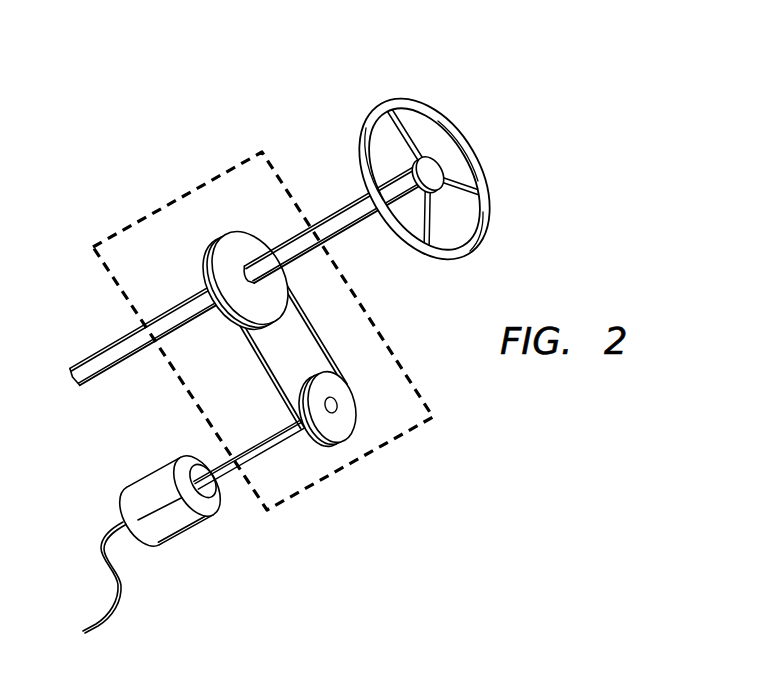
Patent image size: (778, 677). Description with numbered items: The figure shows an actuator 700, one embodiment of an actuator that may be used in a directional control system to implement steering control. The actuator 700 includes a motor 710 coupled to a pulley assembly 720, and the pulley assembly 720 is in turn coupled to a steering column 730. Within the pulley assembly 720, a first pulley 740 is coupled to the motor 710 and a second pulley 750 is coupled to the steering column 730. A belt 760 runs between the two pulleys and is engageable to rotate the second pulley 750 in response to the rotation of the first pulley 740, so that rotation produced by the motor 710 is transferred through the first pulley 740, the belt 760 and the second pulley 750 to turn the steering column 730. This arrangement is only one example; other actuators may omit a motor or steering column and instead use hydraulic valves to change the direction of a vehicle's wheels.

The actuator 700 is at (132, 166).
The motor 710 is at (148, 472).
The pulley assembly 720 is at (347, 474).
The steering column 730 is at (360, 232).
The first pulley 740 is at (355, 410).
The second pulley 750 is at (246, 242).
The belt 760 is at (267, 370).